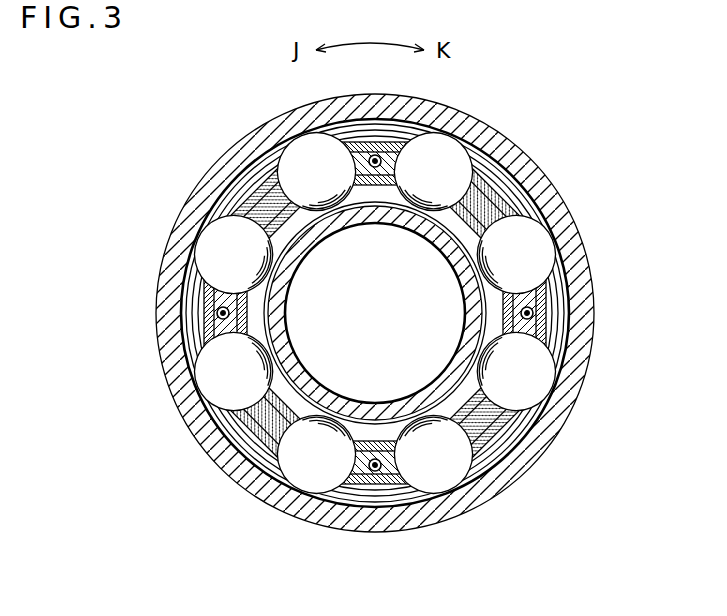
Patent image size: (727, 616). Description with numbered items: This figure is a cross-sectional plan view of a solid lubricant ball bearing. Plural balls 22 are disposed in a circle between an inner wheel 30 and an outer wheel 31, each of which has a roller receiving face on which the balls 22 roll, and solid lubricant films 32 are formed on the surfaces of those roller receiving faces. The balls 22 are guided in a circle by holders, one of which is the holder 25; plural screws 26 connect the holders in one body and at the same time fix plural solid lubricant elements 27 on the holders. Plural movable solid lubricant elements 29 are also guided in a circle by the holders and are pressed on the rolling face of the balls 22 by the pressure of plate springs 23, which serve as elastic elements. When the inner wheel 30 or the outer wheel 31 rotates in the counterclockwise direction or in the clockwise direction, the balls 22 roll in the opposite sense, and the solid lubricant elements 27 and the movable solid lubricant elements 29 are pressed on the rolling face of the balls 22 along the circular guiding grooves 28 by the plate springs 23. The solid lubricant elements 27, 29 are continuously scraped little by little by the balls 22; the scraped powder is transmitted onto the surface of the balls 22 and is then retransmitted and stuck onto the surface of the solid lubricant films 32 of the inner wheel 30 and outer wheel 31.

The balls 22 is at (317, 168).
The plate springs 23 is at (212, 162).
The holder 25 is at (182, 312).
The screws 26 is at (378, 155).
The solid lubricant elements 27 is at (400, 145).
The circular guiding grooves 28 is at (214, 180).
The movable solid lubricant elements 29 is at (250, 177).
The inner wheel 30 is at (425, 433).
The outer wheel 31 is at (597, 300).
The solid lubricant films 32 is at (575, 340).